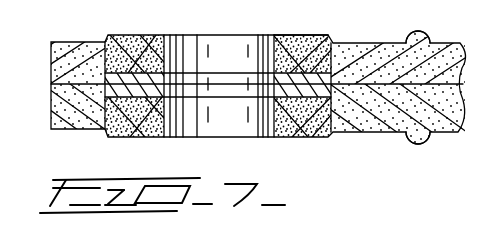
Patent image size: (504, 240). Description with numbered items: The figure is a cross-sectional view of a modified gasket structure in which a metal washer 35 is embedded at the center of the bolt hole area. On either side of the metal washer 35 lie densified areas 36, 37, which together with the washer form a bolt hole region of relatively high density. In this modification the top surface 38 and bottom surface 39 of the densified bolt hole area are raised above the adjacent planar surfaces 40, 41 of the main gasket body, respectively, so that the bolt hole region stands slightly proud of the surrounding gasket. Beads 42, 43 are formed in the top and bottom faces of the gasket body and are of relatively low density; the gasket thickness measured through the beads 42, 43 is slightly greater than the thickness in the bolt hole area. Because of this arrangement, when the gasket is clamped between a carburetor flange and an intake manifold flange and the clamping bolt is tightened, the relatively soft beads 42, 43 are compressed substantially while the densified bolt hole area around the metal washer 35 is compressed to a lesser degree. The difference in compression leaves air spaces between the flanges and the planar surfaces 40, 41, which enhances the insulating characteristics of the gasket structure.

The metal washer 35 is at (184, 56).
The densified area 36 is at (300, 41).
The densified area 37 is at (294, 137).
The top surface 38 is at (316, 42).
The bottom surface 39 is at (310, 137).
The planar surface 40 is at (371, 43).
The planar surface 41 is at (371, 133).
The bead 42 is at (425, 33).
The bead 43 is at (420, 142).